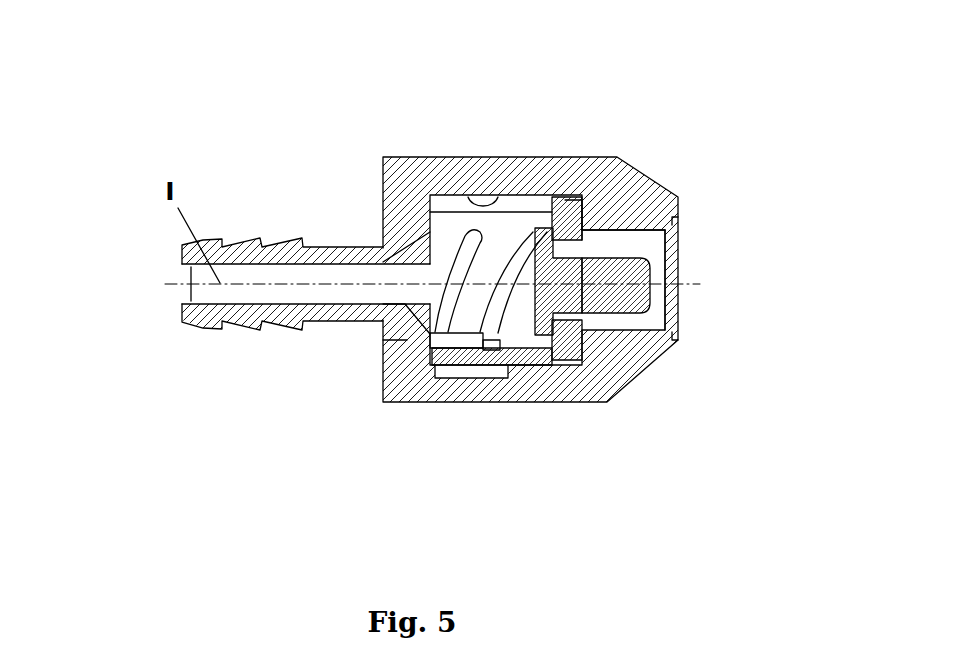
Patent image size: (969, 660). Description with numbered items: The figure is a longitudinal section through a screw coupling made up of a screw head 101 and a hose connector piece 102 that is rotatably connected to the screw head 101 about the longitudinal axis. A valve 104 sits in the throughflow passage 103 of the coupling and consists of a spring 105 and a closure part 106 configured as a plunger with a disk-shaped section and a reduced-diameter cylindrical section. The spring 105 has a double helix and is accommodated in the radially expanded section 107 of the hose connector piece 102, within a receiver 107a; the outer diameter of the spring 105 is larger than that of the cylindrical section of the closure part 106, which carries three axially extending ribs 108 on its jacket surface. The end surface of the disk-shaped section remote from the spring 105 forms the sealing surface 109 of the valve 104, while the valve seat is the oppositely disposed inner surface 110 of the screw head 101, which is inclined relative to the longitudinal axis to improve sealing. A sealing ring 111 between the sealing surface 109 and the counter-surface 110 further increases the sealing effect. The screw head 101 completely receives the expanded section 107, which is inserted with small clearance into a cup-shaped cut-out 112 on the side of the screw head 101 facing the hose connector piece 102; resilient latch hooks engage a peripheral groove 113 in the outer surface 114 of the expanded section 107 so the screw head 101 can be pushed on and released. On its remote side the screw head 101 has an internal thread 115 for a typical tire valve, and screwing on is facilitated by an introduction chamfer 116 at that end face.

The screw head 101 is at (627, 350).
The hose connector piece 102 is at (278, 252).
The throughflow passage 103 is at (238, 293).
The valve 104 is at (513, 332).
The spring 105 is at (468, 232).
The closure part 106 is at (578, 288).
The radially expanded section 107 is at (407, 340).
The receiver 107a is at (462, 310).
The axially extending ribs 108 is at (600, 253).
The sealing surface 109 is at (560, 215).
The inner surface 110 is at (573, 355).
The sealing ring 111 is at (572, 212).
The cup-shaped cut-out 112 is at (482, 203).
The peripheral groove 113 is at (453, 364).
The outer surface 114 is at (490, 367).
The internal thread 115 is at (646, 317).
The introduction chamfer 116 is at (676, 214).